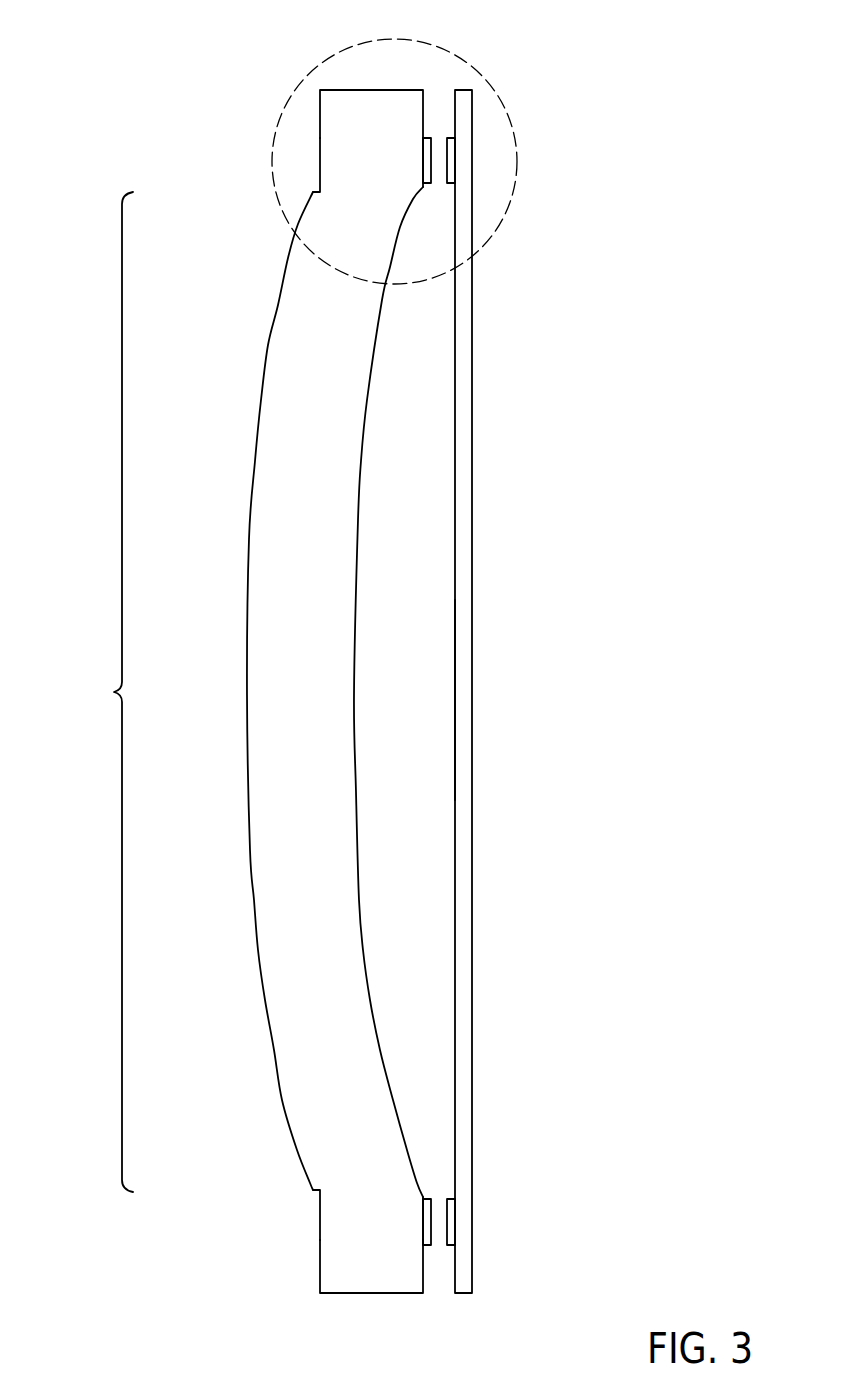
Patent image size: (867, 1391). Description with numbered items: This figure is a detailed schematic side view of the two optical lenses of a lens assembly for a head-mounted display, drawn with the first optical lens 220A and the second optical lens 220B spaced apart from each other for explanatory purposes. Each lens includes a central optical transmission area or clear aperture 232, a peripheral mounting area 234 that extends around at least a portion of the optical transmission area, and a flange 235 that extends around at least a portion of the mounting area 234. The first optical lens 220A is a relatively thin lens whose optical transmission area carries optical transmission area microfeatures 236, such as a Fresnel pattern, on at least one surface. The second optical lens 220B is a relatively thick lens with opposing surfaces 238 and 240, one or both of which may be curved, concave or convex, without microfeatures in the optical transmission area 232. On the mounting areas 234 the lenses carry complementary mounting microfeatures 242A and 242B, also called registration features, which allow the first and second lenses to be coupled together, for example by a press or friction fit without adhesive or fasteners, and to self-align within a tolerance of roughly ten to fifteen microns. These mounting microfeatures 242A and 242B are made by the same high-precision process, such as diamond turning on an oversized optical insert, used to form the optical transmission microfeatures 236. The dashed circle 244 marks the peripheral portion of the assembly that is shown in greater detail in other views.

The optical transmission area 232 is at (114, 692).
The first optical lens 220A is at (473, 182).
The second optical lens 220B is at (351, 682).
The mounting area 234 is at (310, 186).
The flange 235 is at (310, 138).
The optical transmission area microfeatures 236 is at (456, 769).
The surface 238 is at (356, 691).
The surface 240 is at (247, 578).
The mounting microfeatures 242A is at (449, 138).
The mounting microfeatures 242B is at (428, 137).
The dashed circle 244 is at (505, 213).